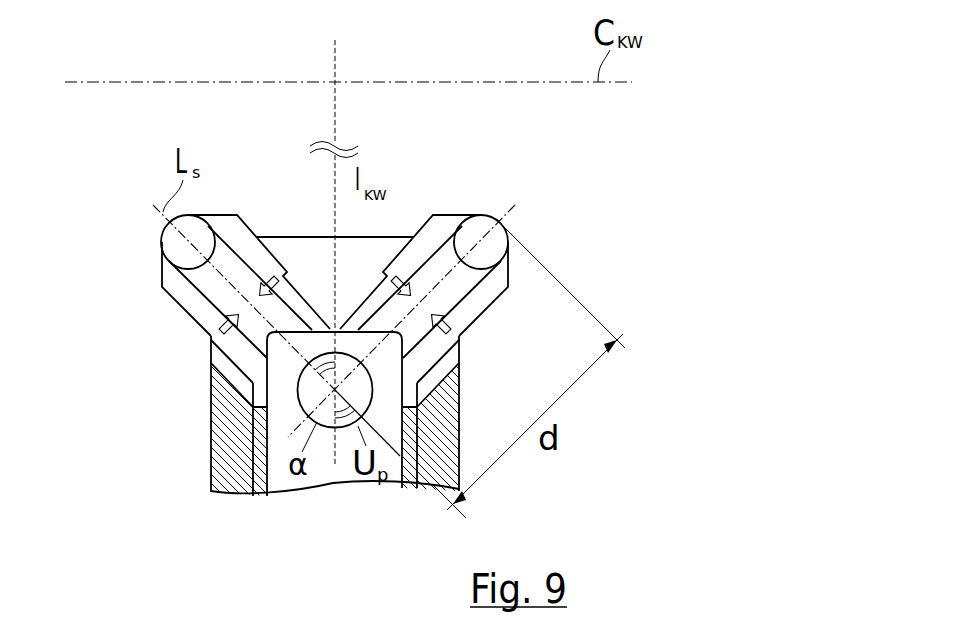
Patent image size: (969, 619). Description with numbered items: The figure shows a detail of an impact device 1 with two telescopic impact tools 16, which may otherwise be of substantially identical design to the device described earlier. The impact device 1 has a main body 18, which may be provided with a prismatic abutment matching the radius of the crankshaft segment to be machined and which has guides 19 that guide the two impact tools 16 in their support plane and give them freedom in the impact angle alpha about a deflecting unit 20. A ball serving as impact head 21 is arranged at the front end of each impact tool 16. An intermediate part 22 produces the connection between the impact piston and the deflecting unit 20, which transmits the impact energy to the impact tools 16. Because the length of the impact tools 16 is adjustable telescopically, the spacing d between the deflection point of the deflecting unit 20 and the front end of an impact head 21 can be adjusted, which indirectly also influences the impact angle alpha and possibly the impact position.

The impact device 1 is at (203, 523).
The impact tools 16 is at (180, 328).
The main body 18 is at (222, 452).
The guides 19 is at (228, 370).
The deflecting unit 20 is at (400, 378).
The impact head 21 is at (162, 244).
The intermediate part 22 is at (292, 487).